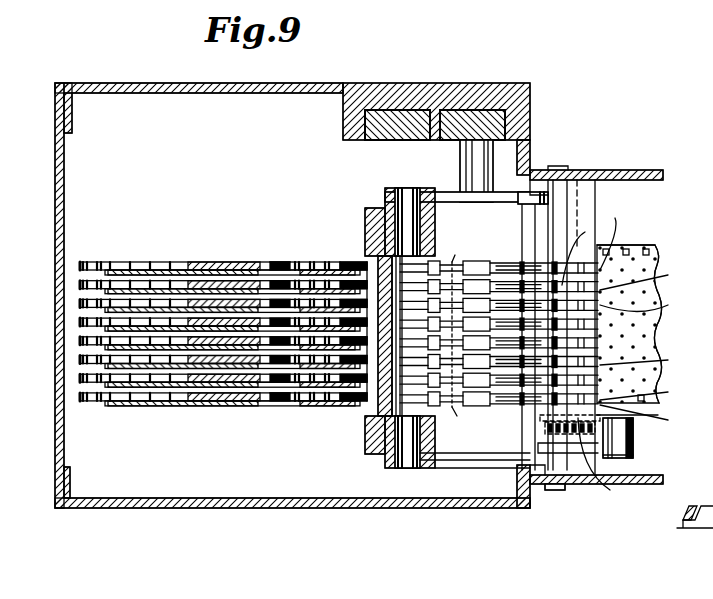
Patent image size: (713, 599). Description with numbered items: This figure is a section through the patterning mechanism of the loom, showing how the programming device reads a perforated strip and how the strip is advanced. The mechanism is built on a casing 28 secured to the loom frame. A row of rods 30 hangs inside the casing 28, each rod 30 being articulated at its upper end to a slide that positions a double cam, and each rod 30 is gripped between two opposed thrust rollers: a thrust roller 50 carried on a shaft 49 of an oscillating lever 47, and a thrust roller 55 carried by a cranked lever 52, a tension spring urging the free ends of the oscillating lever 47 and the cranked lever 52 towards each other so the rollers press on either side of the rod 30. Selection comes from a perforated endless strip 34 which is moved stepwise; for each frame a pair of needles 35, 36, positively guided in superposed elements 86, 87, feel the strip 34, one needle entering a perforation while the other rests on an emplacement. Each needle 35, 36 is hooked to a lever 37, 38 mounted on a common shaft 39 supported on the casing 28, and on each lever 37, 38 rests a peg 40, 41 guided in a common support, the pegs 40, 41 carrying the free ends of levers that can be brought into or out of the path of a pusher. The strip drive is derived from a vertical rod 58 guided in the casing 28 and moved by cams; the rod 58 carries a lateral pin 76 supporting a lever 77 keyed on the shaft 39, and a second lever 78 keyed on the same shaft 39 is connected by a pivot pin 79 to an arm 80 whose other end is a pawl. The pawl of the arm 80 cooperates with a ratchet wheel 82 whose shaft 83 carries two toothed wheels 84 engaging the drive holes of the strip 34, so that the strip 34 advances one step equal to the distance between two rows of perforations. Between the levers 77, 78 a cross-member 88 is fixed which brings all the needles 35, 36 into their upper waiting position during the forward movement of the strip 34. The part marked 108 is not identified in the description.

The casing 28 is at (55, 244).
The rod 30 is at (224, 262).
The perforated endless strip 34 is at (662, 330).
The needle 35 is at (598, 266).
The needle 36 is at (647, 286).
The lever 37 is at (648, 365).
The lever 38 is at (647, 341).
The shaft 39 is at (405, 468).
The peg 40 is at (454, 268).
The peg 41 is at (451, 260).
The oscillating lever 47 is at (297, 260).
The shaft of thrust roller 49 is at (344, 253).
The thrust roller 50 is at (370, 252).
The cranked lever 52 is at (143, 260).
The thrust roller 55 is at (82, 262).
The vertical rod 58 is at (456, 140).
The lateral pin 76 is at (491, 171).
The lever 77 is at (445, 200).
The second lever 78 is at (477, 461).
The pivot pin 79 is at (635, 459).
The arm 80 is at (633, 434).
The ratchet wheel 82 is at (511, 429).
The shaft 83 is at (554, 490).
The toothed wheels 84 is at (593, 363).
The superposed element 86 is at (594, 190).
The superposed element 87 is at (586, 327).
The cross-member 88 is at (522, 217).
The block 108 is at (403, 140).